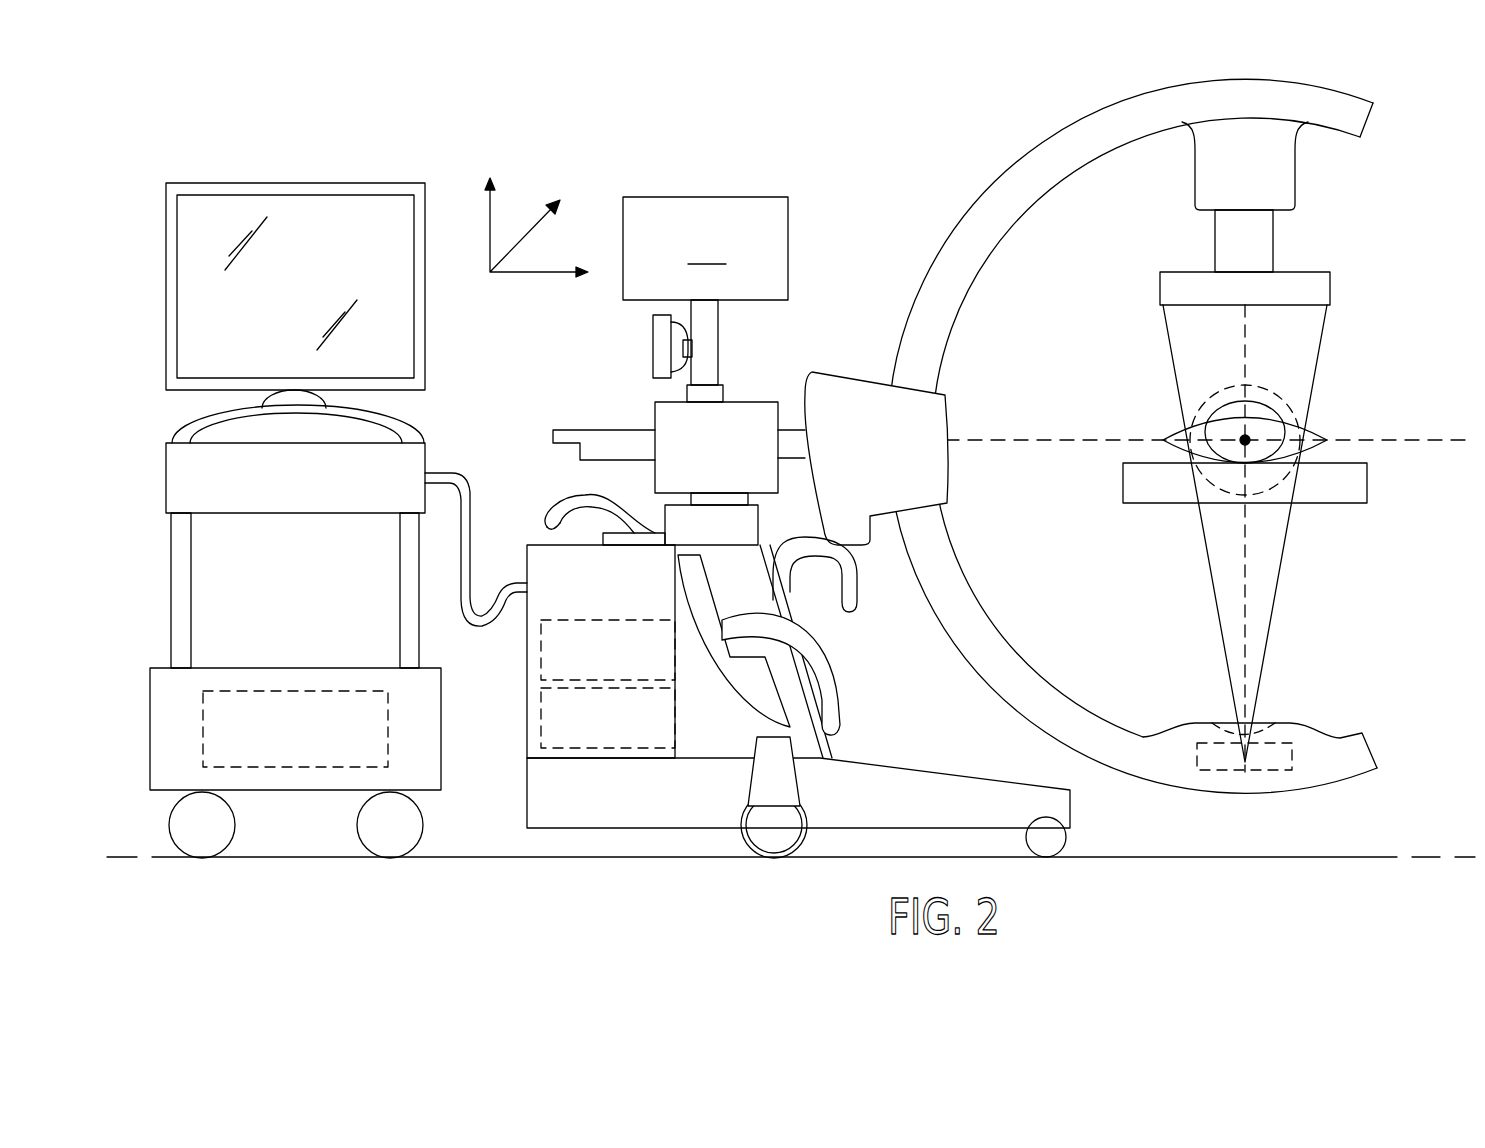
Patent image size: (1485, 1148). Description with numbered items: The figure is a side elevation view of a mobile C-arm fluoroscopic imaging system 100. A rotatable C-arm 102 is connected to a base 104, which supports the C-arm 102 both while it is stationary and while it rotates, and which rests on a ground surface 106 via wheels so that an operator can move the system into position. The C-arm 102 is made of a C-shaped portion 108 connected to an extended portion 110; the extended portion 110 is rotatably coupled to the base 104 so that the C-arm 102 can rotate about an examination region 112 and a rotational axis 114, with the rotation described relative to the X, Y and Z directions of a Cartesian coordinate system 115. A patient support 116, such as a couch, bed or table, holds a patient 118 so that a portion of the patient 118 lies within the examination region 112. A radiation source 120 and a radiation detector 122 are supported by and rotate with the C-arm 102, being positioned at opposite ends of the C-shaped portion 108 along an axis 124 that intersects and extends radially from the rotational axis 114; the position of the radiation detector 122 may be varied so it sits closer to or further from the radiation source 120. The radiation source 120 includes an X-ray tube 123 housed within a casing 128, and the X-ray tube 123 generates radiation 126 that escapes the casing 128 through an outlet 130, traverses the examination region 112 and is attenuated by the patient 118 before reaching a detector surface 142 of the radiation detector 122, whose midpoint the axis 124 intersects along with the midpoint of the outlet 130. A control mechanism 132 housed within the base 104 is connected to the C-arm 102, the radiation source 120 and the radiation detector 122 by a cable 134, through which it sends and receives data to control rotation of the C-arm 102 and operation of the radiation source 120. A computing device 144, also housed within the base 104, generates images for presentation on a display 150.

The mobile C-arm fluoroscopic imaging system 100 is at (658, 96).
The C-arm 102 is at (1151, 445).
The base 104 is at (636, 578).
The ground surface 106 is at (1102, 855).
The C-shaped portion 108 is at (988, 243).
The extended portion 110 is at (833, 368).
The examination region 112 is at (1283, 482).
The rotational axis 114 is at (1247, 438).
The Cartesian coordinate system 115 is at (523, 175).
The patient support 116 is at (1150, 503).
The patient 118 is at (1305, 432).
The radiation source 120 is at (1259, 735).
The radiation detector 122 is at (1257, 447).
The X-ray tube 123 is at (1295, 758).
The axis 124 is at (1250, 598).
The radiation 126 is at (1178, 388).
The casing 128 is at (1322, 735).
The outlet 130 is at (1267, 722).
The control mechanism 132 is at (541, 713).
The cable 134 is at (852, 615).
The detector surface 142 is at (1190, 305).
The computing device 144 is at (541, 645).
The display 150 is at (300, 183).